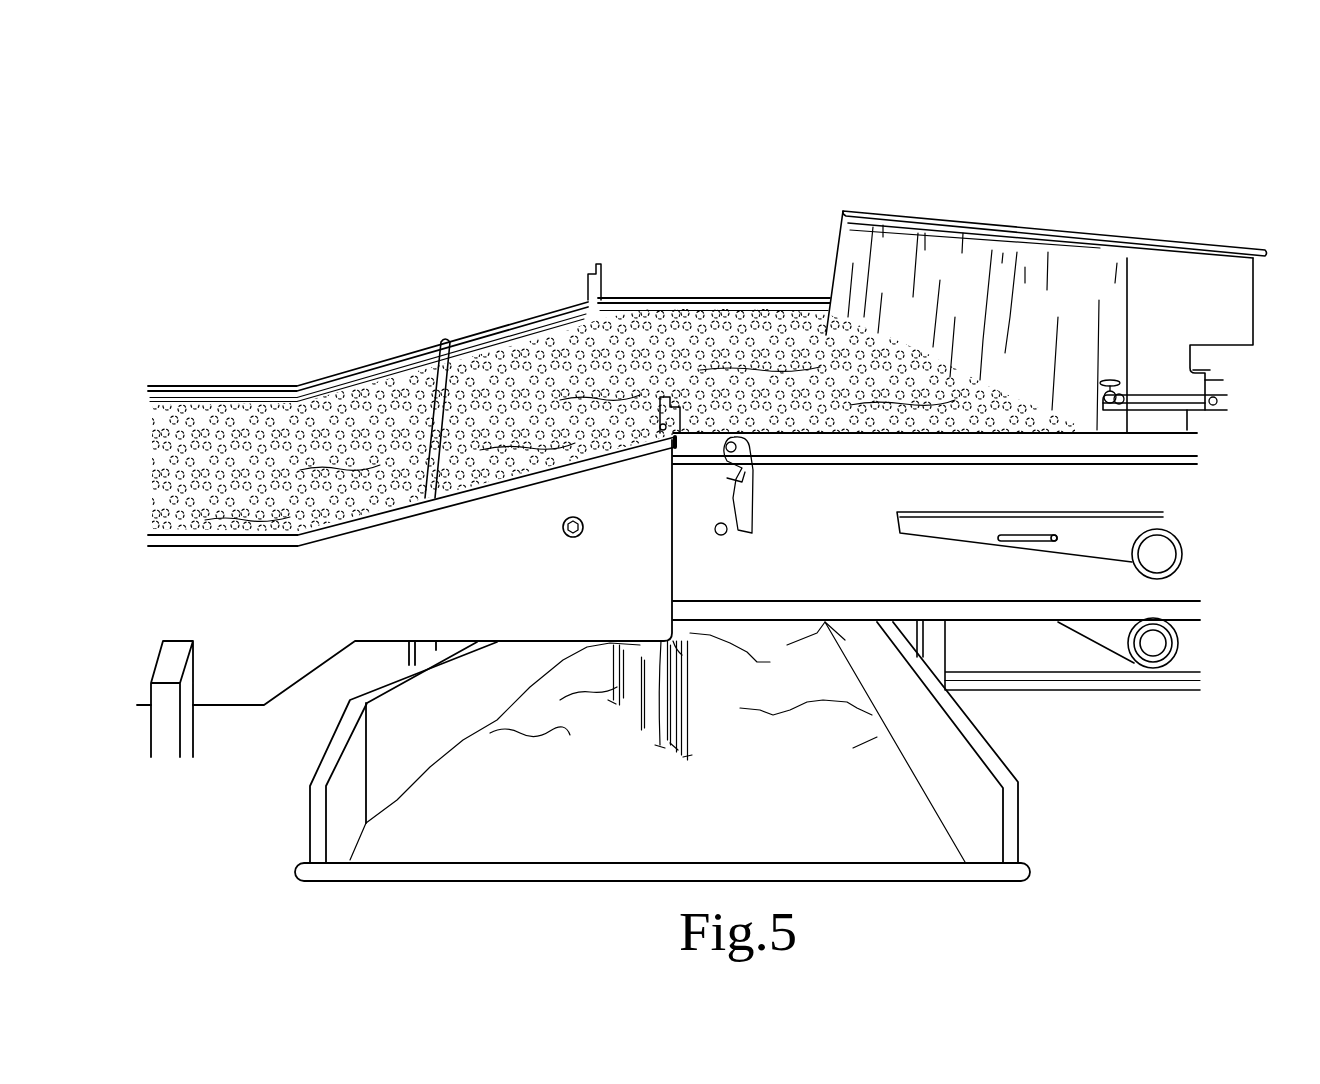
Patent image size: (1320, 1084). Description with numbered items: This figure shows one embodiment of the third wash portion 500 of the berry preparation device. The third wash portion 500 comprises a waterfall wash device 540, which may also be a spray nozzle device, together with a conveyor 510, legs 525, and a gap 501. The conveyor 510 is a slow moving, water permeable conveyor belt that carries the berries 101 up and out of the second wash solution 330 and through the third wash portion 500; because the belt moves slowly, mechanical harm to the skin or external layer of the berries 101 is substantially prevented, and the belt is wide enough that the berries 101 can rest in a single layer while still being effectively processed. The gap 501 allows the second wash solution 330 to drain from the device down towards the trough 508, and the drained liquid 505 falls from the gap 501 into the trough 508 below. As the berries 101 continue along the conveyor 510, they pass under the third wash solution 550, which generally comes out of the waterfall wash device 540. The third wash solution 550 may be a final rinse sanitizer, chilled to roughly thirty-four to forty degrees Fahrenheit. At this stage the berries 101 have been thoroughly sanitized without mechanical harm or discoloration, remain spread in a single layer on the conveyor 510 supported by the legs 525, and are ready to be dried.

The third wash portion 500 is at (458, 85).
The berries 101 is at (242, 448).
The conveyor 510 is at (630, 338).
The second wash solution 330 is at (322, 403).
The third wash solution 550 is at (920, 227).
The waterfall wash device 540 is at (1002, 222).
The gap 501 is at (672, 628).
The discharged product stream 505 is at (678, 690).
The legs 525 is at (938, 662).
The trough 508 is at (903, 817).